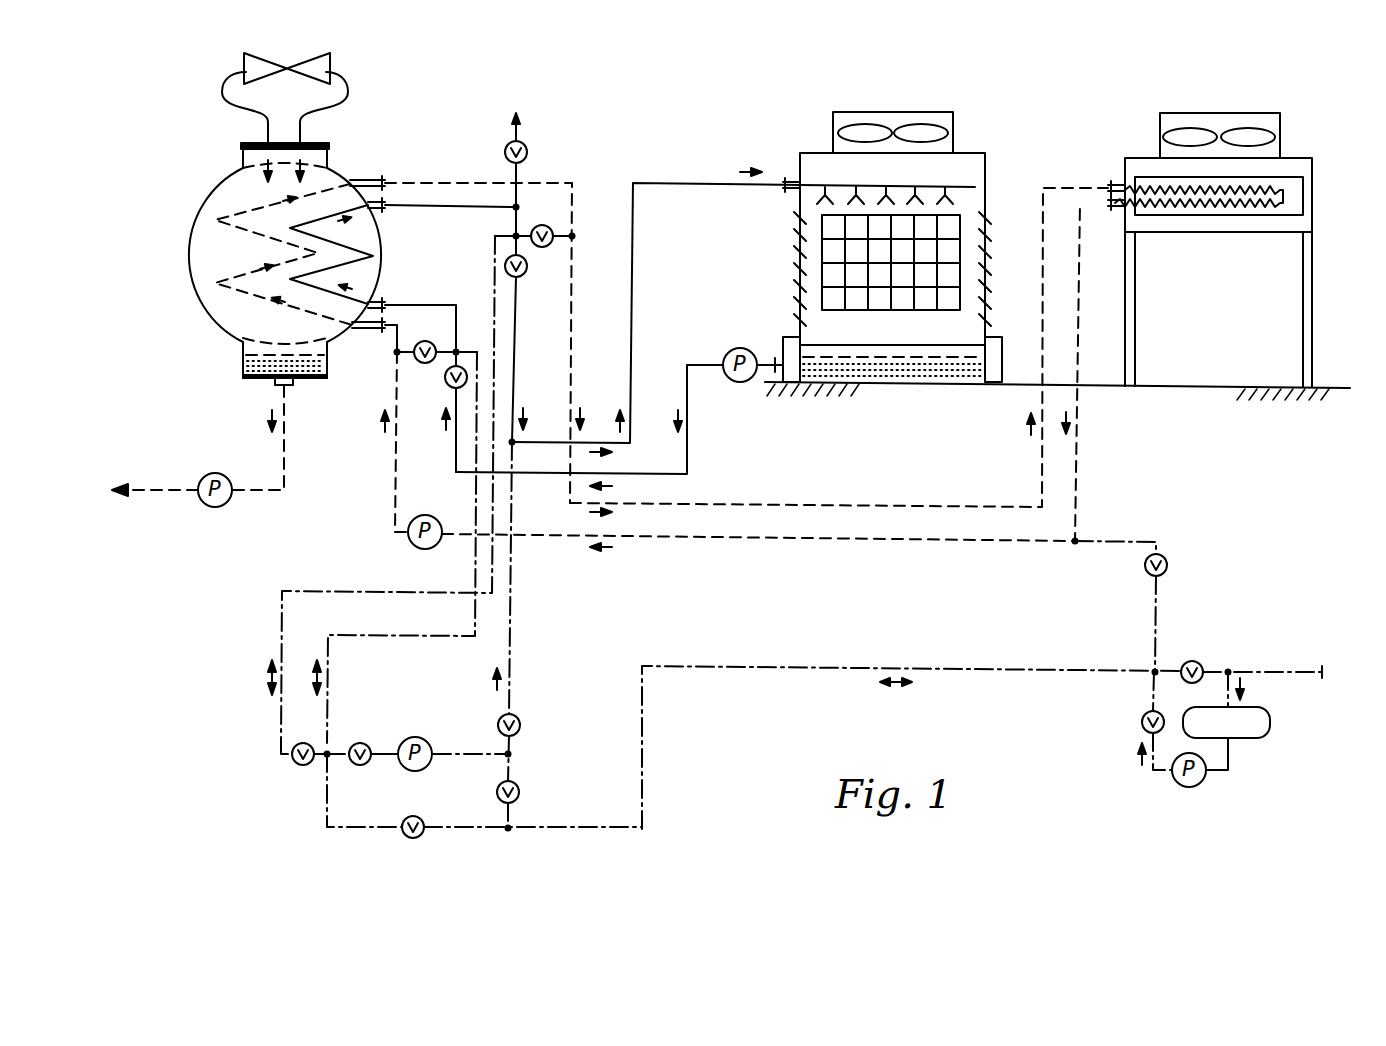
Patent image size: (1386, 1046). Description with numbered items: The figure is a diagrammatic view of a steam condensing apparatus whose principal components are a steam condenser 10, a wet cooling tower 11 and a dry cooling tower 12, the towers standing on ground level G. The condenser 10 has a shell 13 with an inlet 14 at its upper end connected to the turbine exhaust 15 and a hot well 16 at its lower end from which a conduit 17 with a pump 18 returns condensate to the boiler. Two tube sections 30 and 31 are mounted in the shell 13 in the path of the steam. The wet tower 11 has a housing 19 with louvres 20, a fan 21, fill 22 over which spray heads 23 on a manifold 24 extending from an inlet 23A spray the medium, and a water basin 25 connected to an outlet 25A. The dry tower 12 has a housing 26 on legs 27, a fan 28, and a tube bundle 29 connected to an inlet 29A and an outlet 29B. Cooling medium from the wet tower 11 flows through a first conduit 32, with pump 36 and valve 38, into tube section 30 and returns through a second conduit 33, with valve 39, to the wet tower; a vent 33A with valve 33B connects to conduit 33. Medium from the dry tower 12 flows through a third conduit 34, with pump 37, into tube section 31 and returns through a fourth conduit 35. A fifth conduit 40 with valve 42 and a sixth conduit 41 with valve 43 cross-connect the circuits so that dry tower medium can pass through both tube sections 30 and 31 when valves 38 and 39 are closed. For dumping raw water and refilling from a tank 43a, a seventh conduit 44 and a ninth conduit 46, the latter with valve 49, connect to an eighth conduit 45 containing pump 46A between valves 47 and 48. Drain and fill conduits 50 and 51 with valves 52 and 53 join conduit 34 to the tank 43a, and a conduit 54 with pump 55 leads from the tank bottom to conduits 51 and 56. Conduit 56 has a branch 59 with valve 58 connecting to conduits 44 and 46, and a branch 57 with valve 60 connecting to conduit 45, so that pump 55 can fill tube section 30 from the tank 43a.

The steam condenser 10 is at (243, 250).
The wet cooling tower 11 is at (881, 248).
The dry cooling tower 12 is at (1210, 224).
The shell 13 is at (190, 250).
The inlet 14 is at (328, 147).
The turbine exhaust 15 is at (334, 66).
The hot well 16 is at (243, 366).
The conduit 17 is at (285, 448).
The pump 18 is at (214, 472).
The housing 19 is at (985, 170).
The louvres 20 is at (797, 245).
The fan 21 is at (865, 122).
The fill 22 is at (955, 248).
The spray heads 23 is at (978, 202).
The inlet 23A is at (792, 178).
The manifold 24 is at (847, 184).
The water basin 25 is at (902, 345).
The outlet 25A is at (772, 383).
The housing 26 is at (1313, 165).
The legs 27 is at (1303, 278).
The fan 28 is at (1187, 130).
The tube bundle 29 is at (1310, 219).
The inlet 29A is at (1116, 183).
The outlet 29B is at (1115, 212).
The tube section 30 is at (362, 246).
The tube section 31 is at (243, 213).
The first conduit 32 is at (688, 461).
The second conduit 33 is at (660, 183).
The vent 33A is at (511, 172).
The valve 33B is at (526, 147).
The third conduit 34 is at (686, 540).
The fourth conduit 35 is at (821, 503).
The pump 36 is at (740, 348).
The pump 37 is at (425, 515).
The valve 38 is at (446, 383).
The valve 39 is at (522, 274).
The fifth conduit 40 is at (440, 345).
The sixth conduit 41 is at (562, 244).
The valve 42 is at (412, 362).
The valve 43 is at (542, 225).
The tank 43a is at (1270, 724).
The seventh conduit 44 is at (448, 634).
The eighth conduit 45 is at (514, 590).
The ninth conduit 46 is at (350, 590).
The pump 46A is at (416, 736).
The valve 47 is at (362, 743).
The valve 48 is at (521, 726).
The valve 49 is at (298, 766).
The drain conduit 50 is at (1100, 542).
The fill conduit 51 is at (1226, 668).
The valve 52 is at (1168, 565).
The valve 53 is at (1191, 660).
The conduit 54 is at (1156, 772).
The pump 55 is at (1203, 784).
The conduit 56 is at (935, 664).
The branch 57 is at (514, 768).
The valve 58 is at (418, 838).
The branch 59 is at (325, 810).
The valve 60 is at (520, 792).
The ground level G is at (1206, 385).